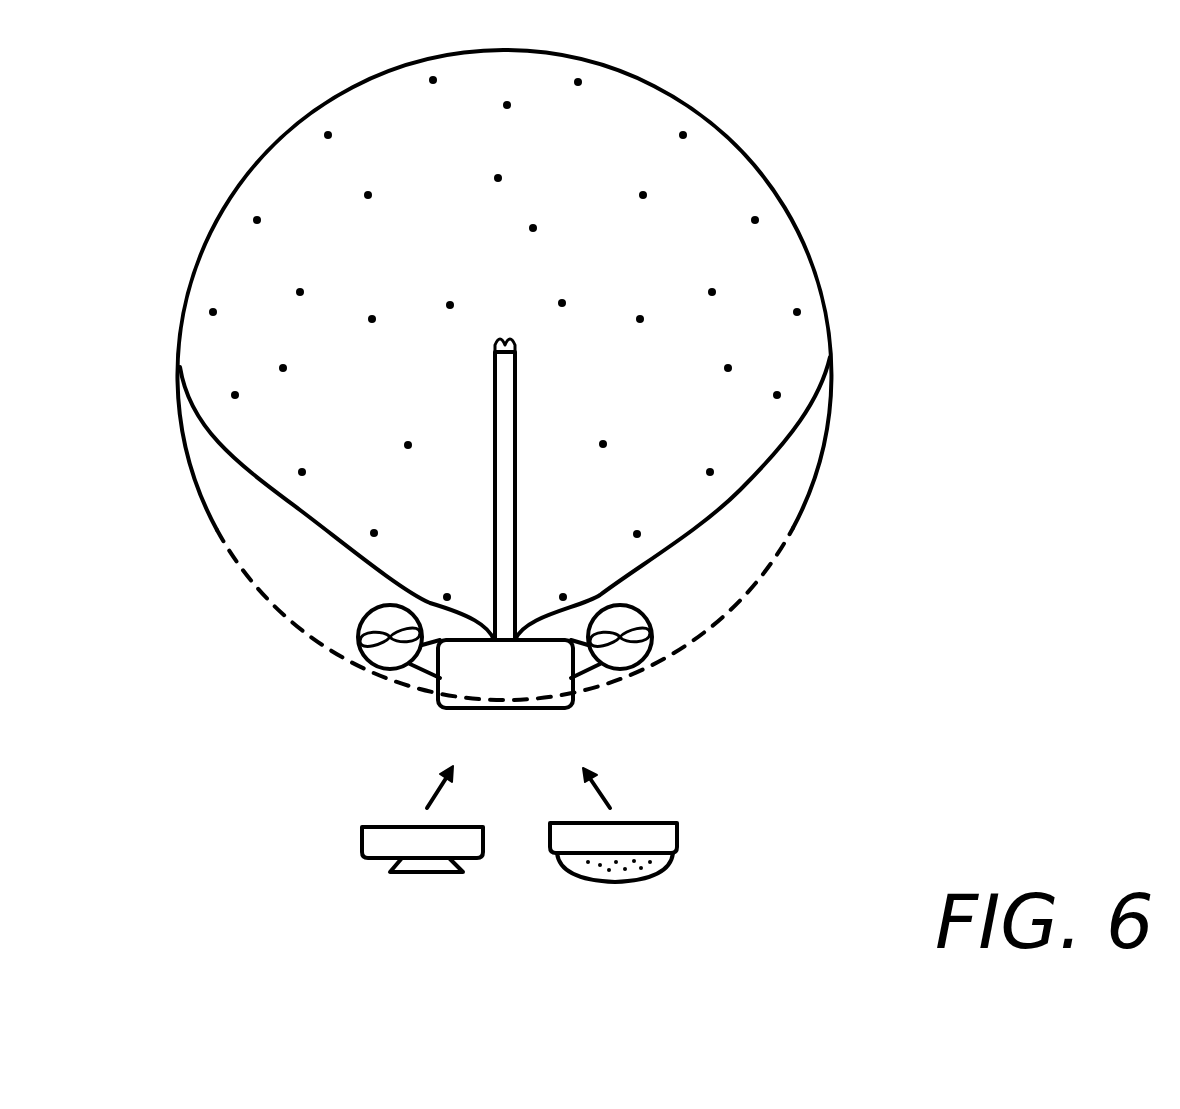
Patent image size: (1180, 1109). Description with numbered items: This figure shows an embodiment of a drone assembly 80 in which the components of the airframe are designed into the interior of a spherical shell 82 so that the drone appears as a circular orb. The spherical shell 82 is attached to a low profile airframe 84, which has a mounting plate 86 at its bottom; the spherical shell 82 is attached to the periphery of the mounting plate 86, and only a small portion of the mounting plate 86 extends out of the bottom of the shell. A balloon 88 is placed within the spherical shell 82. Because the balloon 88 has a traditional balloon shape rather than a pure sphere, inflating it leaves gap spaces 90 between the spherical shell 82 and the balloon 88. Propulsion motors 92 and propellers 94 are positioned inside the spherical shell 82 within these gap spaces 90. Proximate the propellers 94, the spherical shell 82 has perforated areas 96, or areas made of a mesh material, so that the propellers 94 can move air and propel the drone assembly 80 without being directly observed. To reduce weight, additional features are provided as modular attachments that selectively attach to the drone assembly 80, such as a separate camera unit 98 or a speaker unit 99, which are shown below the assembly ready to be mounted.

The drone assembly 80 is at (827, 177).
The spherical shell 82 is at (805, 512).
The low profile airframe 84 is at (500, 682).
The mounting plate 86 is at (462, 708).
The balloon 88 is at (770, 453).
The gap spaces 90 is at (723, 553).
The propulsion motors 92 is at (625, 670).
The propellers 94 is at (648, 643).
The perforated areas 96 is at (393, 712).
The camera unit 98 is at (373, 845).
The speaker unit 99 is at (660, 840).